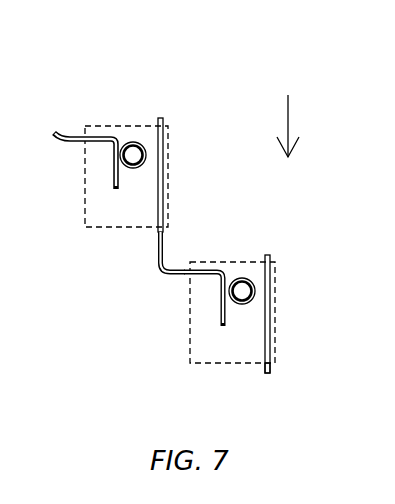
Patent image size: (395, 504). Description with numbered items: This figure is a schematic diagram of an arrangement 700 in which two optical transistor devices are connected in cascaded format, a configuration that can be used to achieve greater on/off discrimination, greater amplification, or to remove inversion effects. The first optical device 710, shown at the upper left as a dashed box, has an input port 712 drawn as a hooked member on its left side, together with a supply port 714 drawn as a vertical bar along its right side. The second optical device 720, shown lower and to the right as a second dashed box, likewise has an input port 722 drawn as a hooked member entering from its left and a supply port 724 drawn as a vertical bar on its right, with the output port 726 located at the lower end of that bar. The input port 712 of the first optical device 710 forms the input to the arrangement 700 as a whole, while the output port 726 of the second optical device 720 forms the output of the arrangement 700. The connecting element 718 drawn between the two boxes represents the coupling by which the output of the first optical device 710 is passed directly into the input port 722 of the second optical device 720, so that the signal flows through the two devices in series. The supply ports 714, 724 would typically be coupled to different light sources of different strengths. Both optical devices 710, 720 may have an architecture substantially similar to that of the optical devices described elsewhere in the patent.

The arrangement 700 is at (243, 82).
The first optical device 710 is at (117, 126).
The input port 712 is at (66, 140).
The supply port 714 is at (164, 122).
The connecting portion 718 is at (164, 236).
The second optical device 720 is at (235, 262).
The input port 722 is at (180, 276).
The supply port 724 is at (271, 256).
The output port 726 is at (271, 372).